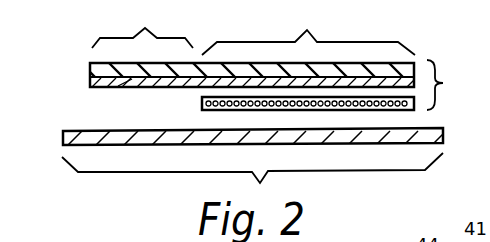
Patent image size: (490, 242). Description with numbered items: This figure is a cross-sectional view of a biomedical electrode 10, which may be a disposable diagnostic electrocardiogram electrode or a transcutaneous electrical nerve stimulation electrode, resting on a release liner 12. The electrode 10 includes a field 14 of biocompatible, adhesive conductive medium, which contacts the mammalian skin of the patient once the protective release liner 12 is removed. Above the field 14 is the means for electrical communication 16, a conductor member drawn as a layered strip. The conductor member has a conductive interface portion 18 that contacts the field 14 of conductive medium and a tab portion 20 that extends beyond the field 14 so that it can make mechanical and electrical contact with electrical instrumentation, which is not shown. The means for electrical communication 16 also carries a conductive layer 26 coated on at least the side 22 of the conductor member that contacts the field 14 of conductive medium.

The electrode 10 is at (451, 85).
The release liner 12 is at (63, 135).
The field of conductive medium 14 is at (202, 104).
The means for electrical communication 16 is at (90, 72).
The conductive interface portion 18 is at (308, 28).
The tab portion 20 is at (142, 24).
The side 22 is at (90, 83).
The conductive layer 26 is at (125, 85).